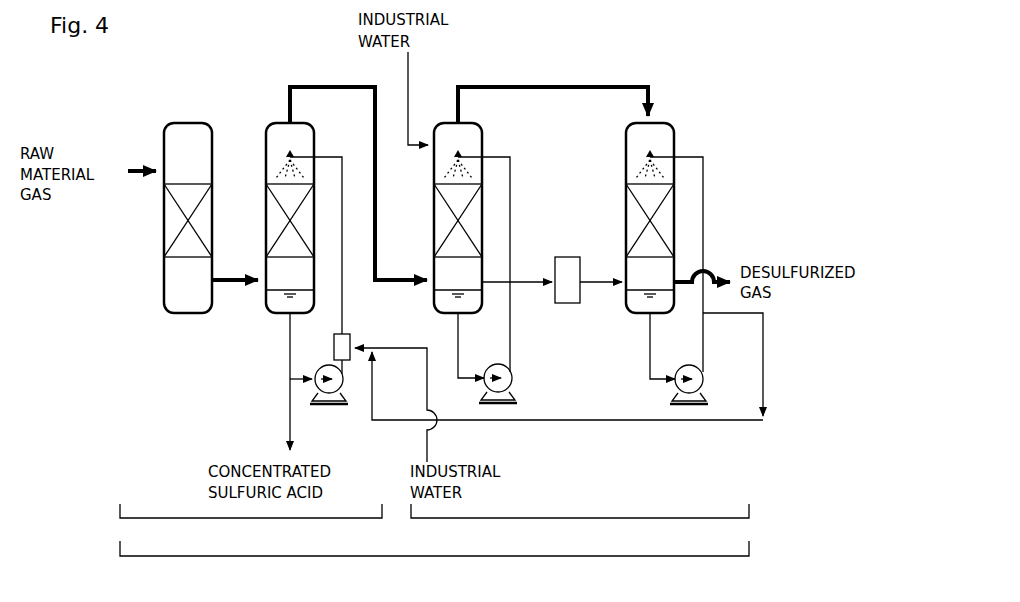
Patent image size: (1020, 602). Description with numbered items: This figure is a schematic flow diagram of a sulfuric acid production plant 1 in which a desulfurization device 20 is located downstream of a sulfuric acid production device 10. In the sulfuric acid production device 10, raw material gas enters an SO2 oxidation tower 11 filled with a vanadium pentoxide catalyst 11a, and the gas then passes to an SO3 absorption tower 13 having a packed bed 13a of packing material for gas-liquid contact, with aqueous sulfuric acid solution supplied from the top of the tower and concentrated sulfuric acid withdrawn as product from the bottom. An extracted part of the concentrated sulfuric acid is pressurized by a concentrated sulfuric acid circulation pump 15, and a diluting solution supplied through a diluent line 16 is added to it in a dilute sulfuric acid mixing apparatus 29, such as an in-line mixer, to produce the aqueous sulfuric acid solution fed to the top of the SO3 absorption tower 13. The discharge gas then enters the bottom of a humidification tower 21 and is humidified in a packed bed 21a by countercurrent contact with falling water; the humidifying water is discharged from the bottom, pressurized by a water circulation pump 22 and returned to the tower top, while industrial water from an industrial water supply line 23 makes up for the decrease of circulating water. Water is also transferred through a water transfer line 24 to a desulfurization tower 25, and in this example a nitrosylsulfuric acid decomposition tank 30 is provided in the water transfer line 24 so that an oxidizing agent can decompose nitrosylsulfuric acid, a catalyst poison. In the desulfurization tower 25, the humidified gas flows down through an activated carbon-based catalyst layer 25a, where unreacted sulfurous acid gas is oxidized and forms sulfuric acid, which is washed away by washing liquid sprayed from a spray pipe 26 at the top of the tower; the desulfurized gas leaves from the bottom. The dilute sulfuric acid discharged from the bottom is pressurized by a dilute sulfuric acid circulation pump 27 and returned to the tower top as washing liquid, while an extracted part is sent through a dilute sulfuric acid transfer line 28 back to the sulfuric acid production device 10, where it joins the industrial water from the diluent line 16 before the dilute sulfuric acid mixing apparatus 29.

The sulfuric acid production plant 1 is at (434, 561).
The sulfuric acid production device 10 is at (251, 522).
The SO2 oxidation tower 11 is at (166, 136).
The vanadium pentoxide catalyst 11a is at (170, 220).
The SO3 absorption tower 13 is at (268, 136).
The packed bed 13a is at (272, 216).
The concentrated sulfuric acid circulation pump 15 is at (342, 390).
The diluent line 16 is at (386, 349).
The desulfurization device 20 is at (580, 522).
The humidification tower 21 is at (478, 138).
The packed bed 21a is at (440, 216).
The water circulation pump 22 is at (511, 386).
The industrial water supply line 23 is at (410, 100).
The water transfer line 24 is at (604, 280).
The desulfurization tower 25 is at (672, 138).
The activated carbon-based catalyst layer 25a is at (632, 216).
The spray pipe 26 is at (636, 150).
The dilute sulfuric acid circulation pump 27 is at (703, 386).
The dilute sulfuric acid transfer line 28 is at (598, 422).
The dilute sulfuric acid mixing apparatus 29 is at (350, 336).
The nitrosylsulfuric acid decomposition tank 30 is at (570, 303).